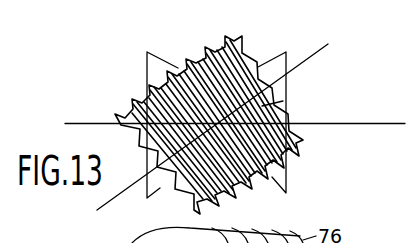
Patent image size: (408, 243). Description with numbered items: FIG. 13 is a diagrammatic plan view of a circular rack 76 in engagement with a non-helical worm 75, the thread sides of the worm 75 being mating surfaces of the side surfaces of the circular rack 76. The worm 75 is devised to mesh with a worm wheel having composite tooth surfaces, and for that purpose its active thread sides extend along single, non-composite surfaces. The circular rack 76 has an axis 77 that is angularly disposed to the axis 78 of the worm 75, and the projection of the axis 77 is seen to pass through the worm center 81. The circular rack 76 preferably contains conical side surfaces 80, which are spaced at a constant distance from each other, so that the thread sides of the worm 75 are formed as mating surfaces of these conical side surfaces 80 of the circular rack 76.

The worm 75 is at (147, 64).
The circular rack 76 is at (248, 43).
The axis of circular rack 77 is at (297, 62).
The axis of worm 78 is at (356, 124).
The conical side surfaces 80 is at (220, 45).
The worm center 81 is at (283, 101).